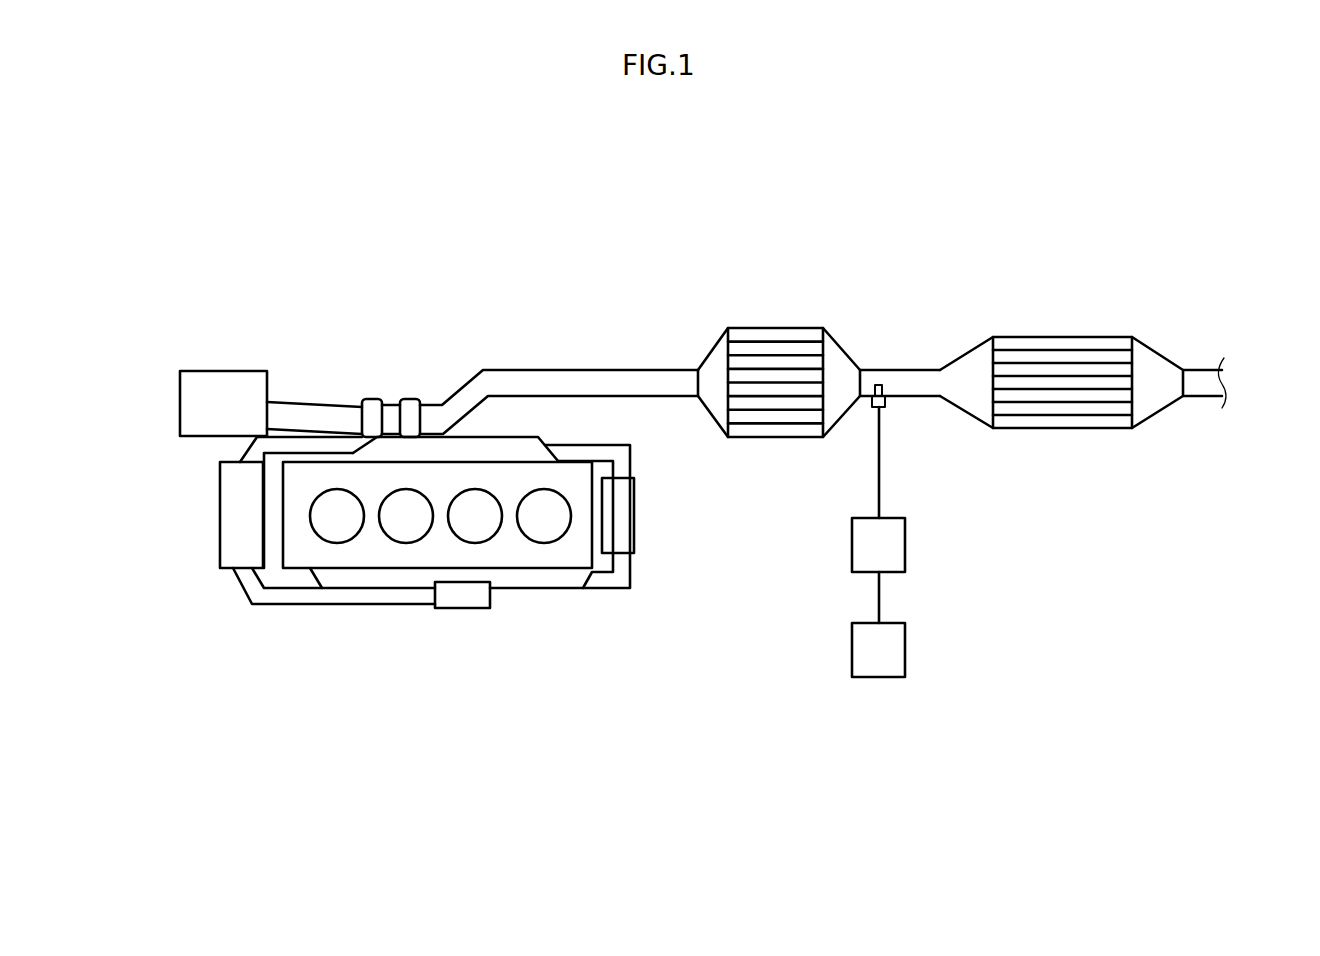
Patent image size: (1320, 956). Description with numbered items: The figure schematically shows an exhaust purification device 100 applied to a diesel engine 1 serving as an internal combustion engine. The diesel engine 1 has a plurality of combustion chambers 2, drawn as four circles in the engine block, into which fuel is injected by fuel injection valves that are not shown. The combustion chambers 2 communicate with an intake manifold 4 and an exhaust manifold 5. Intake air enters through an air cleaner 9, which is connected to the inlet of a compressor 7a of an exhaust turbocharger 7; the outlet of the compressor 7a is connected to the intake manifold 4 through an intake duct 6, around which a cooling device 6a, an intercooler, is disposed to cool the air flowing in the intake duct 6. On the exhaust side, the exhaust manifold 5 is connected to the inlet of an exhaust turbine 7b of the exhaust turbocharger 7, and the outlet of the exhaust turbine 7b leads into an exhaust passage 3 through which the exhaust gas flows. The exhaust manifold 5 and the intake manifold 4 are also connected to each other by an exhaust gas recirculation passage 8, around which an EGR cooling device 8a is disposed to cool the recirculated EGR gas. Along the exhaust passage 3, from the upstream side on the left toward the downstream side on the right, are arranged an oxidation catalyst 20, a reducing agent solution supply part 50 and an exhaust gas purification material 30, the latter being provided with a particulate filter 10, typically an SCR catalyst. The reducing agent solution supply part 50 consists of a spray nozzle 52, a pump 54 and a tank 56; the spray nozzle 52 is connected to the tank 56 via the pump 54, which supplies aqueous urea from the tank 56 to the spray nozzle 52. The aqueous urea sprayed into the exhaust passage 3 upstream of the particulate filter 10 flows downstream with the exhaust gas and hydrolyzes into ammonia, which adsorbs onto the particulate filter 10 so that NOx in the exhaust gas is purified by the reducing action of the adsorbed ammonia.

The exhaust purification device 100 is at (897, 203).
The diesel engine 1 is at (548, 433).
The combustion chambers 2 is at (338, 543).
The exhaust passage 3 is at (537, 372).
The intake manifold 4 is at (517, 588).
The exhaust manifold 5 is at (509, 451).
The intake duct 6 is at (405, 604).
The cooling device 6a is at (232, 524).
The exhaust turbocharger 7 is at (391, 404).
The compressor 7a is at (365, 397).
The exhaust turbine 7b is at (418, 398).
The exhaust gas recirculation passage 8 is at (622, 460).
The EGR cooling device 8a is at (623, 528).
The air cleaner 9 is at (230, 371).
The particulate filter 10 is at (1108, 335).
The oxidation catalyst 20 is at (795, 325).
The exhaust gas purification material 30 is at (1022, 303).
The reducing agent solution supply part 50 is at (903, 420).
The spray nozzle 52 is at (873, 407).
The pump 54 is at (905, 550).
The tank 56 is at (905, 660).